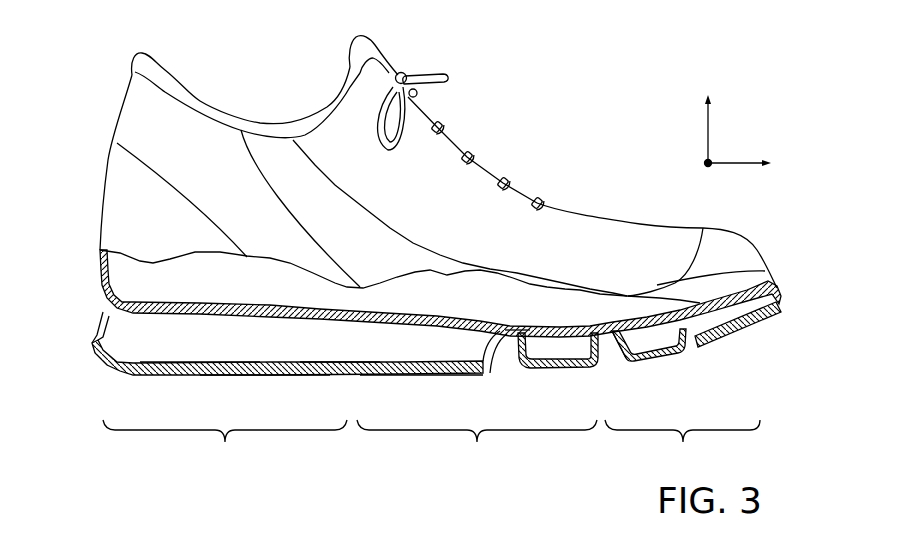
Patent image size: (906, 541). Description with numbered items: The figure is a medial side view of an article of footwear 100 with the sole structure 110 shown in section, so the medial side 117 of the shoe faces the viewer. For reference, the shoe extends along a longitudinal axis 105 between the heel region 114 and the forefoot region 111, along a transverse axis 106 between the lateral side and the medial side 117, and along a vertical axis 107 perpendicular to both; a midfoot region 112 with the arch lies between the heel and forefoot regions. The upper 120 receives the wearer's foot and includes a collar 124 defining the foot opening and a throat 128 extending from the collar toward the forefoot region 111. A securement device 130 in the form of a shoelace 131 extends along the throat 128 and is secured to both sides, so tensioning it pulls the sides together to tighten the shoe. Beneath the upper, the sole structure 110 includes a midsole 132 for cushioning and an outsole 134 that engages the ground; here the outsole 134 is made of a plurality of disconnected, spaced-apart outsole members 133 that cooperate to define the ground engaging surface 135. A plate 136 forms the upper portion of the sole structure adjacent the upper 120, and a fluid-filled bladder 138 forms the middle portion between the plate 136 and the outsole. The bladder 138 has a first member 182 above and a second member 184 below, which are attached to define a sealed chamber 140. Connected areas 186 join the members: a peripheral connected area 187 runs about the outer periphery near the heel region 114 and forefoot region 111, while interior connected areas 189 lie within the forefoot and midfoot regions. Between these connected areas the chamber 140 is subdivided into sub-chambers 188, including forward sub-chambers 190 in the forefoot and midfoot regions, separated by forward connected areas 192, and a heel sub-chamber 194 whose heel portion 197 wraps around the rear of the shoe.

The article of footwear 100 is at (105, 46).
The longitudinal axis 105 is at (760, 163).
The transverse axis 106 is at (738, 123).
The vertical axis 107 is at (708, 117).
The sole structure 110 is at (81, 307).
The forefoot region 111 is at (682, 446).
The midfoot region 112 is at (477, 448).
The heel region 114 is at (225, 448).
The medial side 117 is at (446, 231).
The upper 120 is at (98, 183).
The collar 124 is at (218, 100).
The throat 128 is at (492, 155).
The securement device 130 is at (425, 70).
The shoelace 131 is at (443, 123).
The midsole 132 is at (294, 380).
The outsole members 133 is at (480, 386).
The outsole 134 is at (90, 323).
The ground engaging surface 135 is at (383, 373).
The plate 136 is at (223, 305).
The fluid-filled bladder 138 is at (99, 300).
The chamber 140 is at (208, 365).
The first member 182 is at (288, 305).
The second member 184 is at (262, 372).
The connected areas 186 is at (519, 328).
The peripheral connected area 187 is at (93, 335).
The sub-chambers 188 is at (528, 352).
The interior connected area 189 is at (608, 358).
The forward sub-chambers 190 is at (574, 360).
The forward connected areas 192 is at (697, 343).
The heel sub-chamber 194 is at (353, 366).
The heel portion 197 is at (97, 310).